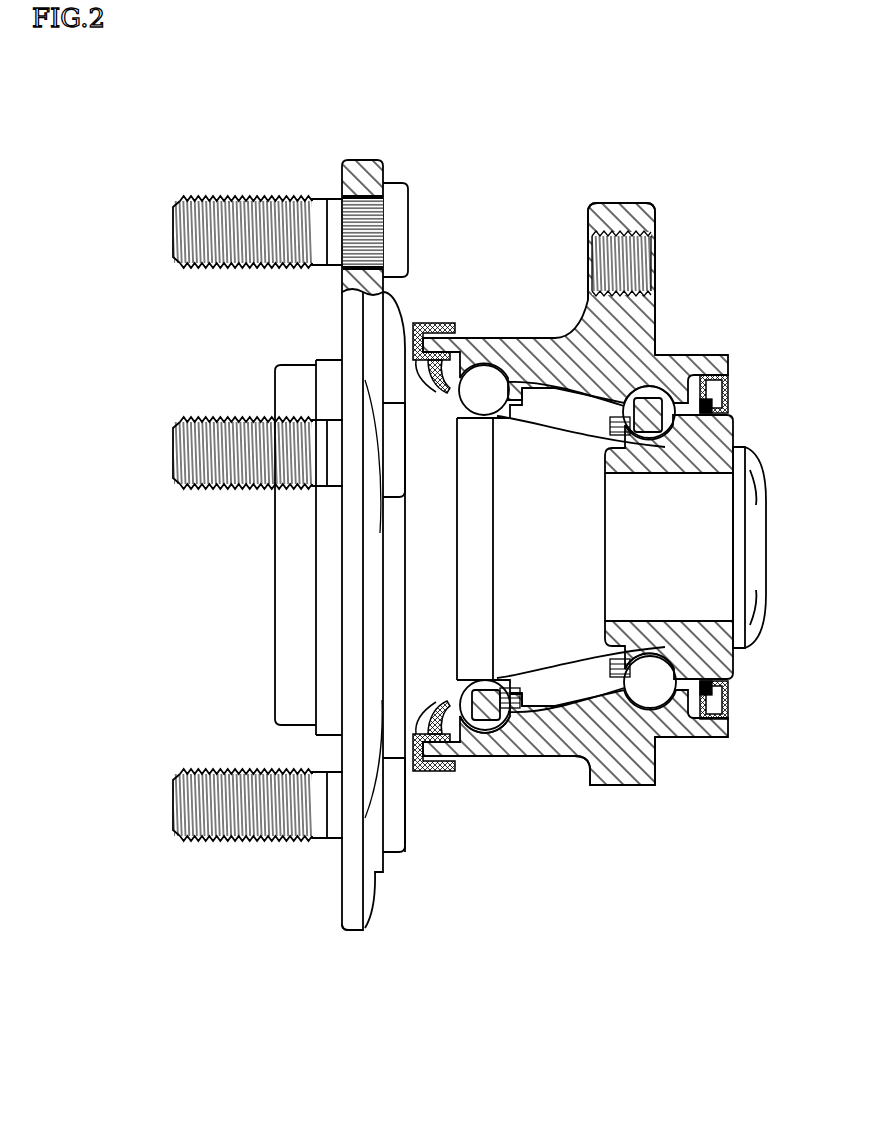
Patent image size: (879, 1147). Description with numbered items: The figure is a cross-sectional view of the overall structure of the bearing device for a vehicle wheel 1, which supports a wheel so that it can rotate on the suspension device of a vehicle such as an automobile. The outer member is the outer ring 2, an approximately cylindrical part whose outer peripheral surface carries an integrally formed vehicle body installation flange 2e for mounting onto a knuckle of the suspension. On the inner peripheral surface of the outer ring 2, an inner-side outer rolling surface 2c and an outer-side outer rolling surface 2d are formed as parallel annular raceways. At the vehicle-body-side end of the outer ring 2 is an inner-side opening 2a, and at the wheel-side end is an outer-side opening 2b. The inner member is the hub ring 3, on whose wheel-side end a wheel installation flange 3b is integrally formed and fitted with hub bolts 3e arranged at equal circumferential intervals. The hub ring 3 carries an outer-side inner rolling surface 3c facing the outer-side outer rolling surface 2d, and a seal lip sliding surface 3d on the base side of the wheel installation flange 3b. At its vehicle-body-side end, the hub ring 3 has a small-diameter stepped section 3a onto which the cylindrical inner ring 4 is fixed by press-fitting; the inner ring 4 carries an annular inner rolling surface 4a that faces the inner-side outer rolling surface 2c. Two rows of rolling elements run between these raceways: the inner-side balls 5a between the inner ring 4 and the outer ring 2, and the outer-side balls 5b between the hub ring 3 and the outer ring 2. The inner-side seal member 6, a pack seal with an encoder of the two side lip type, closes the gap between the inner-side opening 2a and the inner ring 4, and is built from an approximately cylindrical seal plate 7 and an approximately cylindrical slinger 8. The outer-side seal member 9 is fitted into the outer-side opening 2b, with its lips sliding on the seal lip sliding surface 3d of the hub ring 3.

The bearing device for a vehicle wheel 1 is at (74, 106).
The outer ring 2 is at (534, 338).
The inner-side opening 2a is at (690, 740).
The outer-side opening 2b is at (447, 760).
The inner-side outer rolling surface 2c is at (643, 700).
The outer-side outer rolling surface 2d is at (490, 732).
The vehicle body installation flange 2e is at (612, 208).
The hub ring 3 is at (365, 160).
The small-diameter stepped section 3a is at (727, 565).
The wheel installation flange 3b is at (352, 932).
The outer-side inner rolling surface 3c is at (467, 412).
The seal lip sliding surface 3d is at (428, 570).
The hub bolt 3e is at (252, 196).
The inner ring 4 is at (735, 660).
The inner rolling surface 4a is at (648, 660).
The inner-side ball 5a is at (655, 407).
The outer-side ball 5b is at (485, 388).
The inner-side seal member 6 is at (723, 303).
The seal plate 7 is at (710, 380).
The slinger 8 is at (720, 408).
The outer-side seal member 9 is at (437, 333).